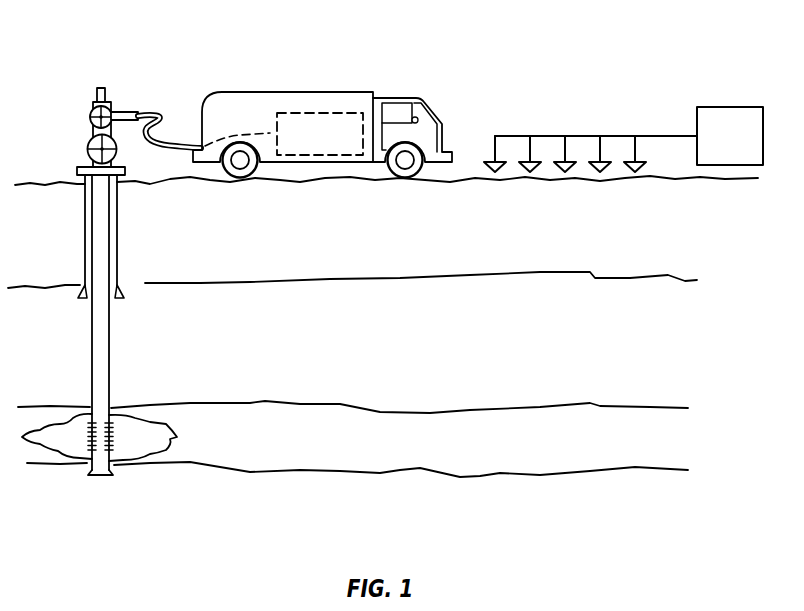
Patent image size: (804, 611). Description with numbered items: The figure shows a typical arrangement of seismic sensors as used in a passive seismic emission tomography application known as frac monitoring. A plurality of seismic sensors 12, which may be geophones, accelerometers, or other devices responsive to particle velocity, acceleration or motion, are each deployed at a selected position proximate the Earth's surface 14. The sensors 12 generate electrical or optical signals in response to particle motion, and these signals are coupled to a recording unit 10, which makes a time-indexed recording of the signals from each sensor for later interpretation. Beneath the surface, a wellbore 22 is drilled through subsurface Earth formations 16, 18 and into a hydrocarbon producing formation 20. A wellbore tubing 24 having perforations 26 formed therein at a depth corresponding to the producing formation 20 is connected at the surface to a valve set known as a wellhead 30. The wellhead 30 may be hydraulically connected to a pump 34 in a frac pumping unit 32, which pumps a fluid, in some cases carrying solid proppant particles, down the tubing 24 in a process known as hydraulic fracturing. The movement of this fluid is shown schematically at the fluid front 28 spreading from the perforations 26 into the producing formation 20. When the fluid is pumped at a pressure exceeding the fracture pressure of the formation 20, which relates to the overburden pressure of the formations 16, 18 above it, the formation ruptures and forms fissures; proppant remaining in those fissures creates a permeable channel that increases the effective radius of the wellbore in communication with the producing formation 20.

The recording unit 10 is at (730, 107).
The seismic sensors 12 is at (491, 165).
The Earth's surface 14 is at (428, 180).
The subsurface Earth formation 16 is at (300, 237).
The subsurface Earth formation 18 is at (300, 339).
The hydrocarbon producing formation 20 is at (300, 455).
The wellbore 22 is at (117, 230).
The wellbore tubing 24 is at (110, 340).
The perforations 26 is at (112, 437).
The fluid front 28 is at (173, 437).
The wellhead 30 is at (129, 110).
The frac pumping unit 32 is at (258, 92).
The pump 34 is at (297, 113).